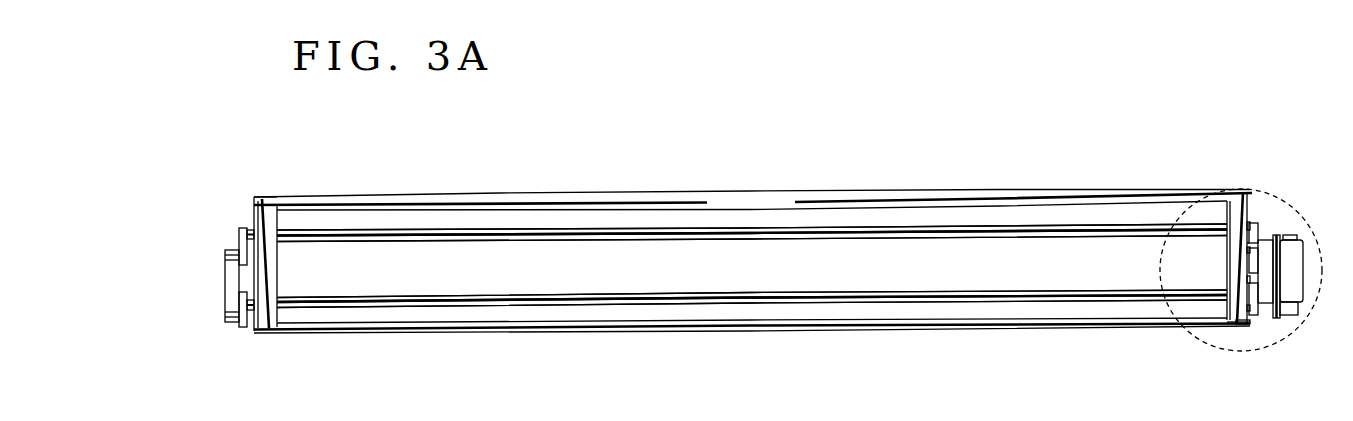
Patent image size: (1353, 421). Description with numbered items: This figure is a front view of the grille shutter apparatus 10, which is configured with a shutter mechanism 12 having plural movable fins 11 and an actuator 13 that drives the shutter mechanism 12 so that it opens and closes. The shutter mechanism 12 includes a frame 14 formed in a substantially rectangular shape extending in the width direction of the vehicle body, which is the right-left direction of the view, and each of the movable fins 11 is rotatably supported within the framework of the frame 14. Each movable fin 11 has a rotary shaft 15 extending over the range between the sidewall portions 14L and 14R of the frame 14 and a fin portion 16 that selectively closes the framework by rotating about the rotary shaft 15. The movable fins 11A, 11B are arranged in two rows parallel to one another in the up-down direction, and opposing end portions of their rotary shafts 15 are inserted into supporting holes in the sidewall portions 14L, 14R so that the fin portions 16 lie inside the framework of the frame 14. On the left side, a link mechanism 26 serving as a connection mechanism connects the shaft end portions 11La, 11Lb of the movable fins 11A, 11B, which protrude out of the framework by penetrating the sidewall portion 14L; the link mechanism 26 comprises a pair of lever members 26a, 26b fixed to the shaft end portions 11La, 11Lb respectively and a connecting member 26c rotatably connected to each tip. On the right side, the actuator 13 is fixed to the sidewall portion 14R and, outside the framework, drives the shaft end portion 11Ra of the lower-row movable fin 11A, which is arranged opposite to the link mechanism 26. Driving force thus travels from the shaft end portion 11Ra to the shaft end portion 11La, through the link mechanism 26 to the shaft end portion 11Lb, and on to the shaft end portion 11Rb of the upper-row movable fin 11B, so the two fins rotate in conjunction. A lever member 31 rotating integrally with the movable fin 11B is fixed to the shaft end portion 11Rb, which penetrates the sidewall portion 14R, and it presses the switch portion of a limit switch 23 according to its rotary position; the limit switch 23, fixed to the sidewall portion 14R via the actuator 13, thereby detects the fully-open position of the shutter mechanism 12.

The grille shutter apparatus 10 is at (256, 140).
The movable fins 11 is at (752, 262).
The movable fin at lower row 11A is at (903, 368).
The movable fin at upper row 11B is at (628, 155).
The shaft end portion 11La is at (251, 310).
The shaft end portion 11Lb is at (251, 228).
The shaft end portion 11Ra is at (1244, 325).
The shaft end portion 11Rb is at (1254, 218).
The shutter mechanism 12 is at (672, 274).
The actuator 13 is at (1287, 317).
The frame 14 is at (930, 190).
The sidewall portion 14L is at (271, 213).
The sidewall portion 14R is at (1230, 205).
The rotary shaft 15 is at (606, 233).
The fin portion 16 is at (545, 229).
The limit switch 23 is at (1251, 263).
The link mechanism 26 is at (160, 232).
The lever member 26a is at (238, 306).
The lever member 26b is at (238, 238).
The connecting member 26c is at (231, 297).
The lever member 31 is at (1258, 230).